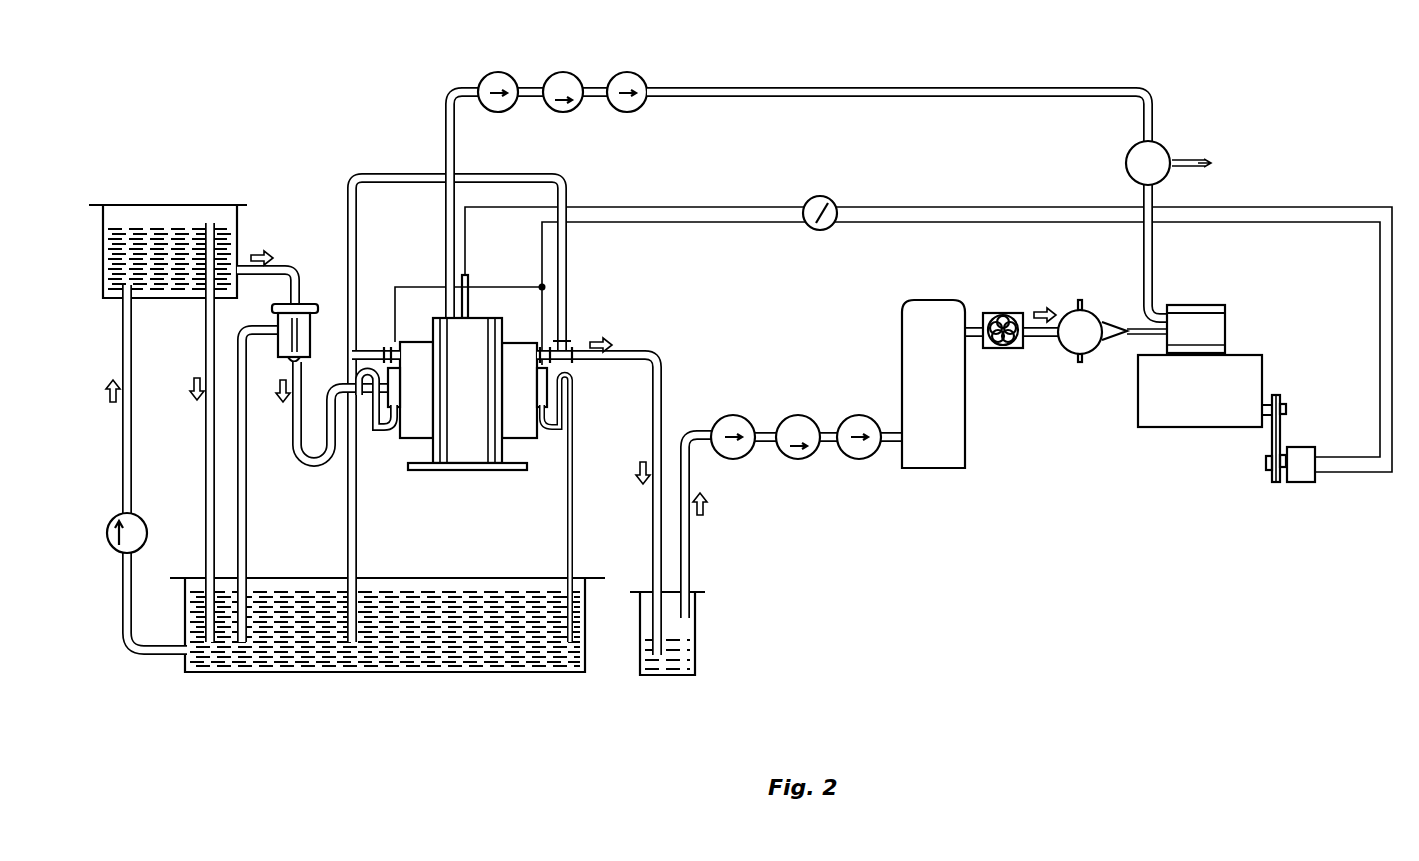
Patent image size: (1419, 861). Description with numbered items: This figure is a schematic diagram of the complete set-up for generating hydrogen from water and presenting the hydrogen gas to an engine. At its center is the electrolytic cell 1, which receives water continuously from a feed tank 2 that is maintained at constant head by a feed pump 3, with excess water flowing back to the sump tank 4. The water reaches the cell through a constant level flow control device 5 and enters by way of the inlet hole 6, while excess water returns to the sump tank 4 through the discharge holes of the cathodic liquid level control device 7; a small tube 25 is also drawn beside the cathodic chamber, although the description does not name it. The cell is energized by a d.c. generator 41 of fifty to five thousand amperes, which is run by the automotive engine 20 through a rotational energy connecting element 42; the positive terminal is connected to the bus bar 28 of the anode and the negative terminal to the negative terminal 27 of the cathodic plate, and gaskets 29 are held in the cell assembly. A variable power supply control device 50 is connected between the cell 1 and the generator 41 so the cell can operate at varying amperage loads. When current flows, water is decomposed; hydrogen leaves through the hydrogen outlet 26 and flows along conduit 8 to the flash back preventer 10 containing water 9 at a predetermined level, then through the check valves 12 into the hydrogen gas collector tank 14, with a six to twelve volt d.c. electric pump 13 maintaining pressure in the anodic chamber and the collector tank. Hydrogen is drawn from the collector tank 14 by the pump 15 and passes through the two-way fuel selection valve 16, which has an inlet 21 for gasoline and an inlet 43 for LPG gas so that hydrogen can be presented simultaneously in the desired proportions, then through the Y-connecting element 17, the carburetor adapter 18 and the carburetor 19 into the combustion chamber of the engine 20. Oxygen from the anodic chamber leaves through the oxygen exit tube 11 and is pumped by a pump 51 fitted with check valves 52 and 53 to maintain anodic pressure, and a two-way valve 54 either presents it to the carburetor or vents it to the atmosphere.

The electrolytic cell 1 is at (478, 334).
The feed tank 2 is at (103, 290).
The feed pump 3 is at (118, 513).
The sump tank 4 is at (585, 645).
The constant level flow control device 5 is at (307, 303).
The inlet hole 6 is at (463, 395).
The cathodic liquid level control device 7 is at (573, 374).
The conduit 8 is at (664, 375).
The water 9 is at (670, 662).
The flash back preventer 10 is at (695, 632).
The oxygen exit tube 11 is at (446, 118).
The check valve 12 is at (733, 414).
The electric pump 13 is at (798, 414).
The hydrogen gas collector tank 14 is at (933, 384).
The pump 15 is at (1003, 312).
The two-way fuel selection valve 16 is at (1066, 312).
The Y-connecting element 17 is at (1123, 328).
The carburetor adapter 18 is at (1195, 305).
The carburetor 19 is at (1215, 331).
The automotive engine 20 is at (1200, 391).
The inlet for gasoline fuel 21 is at (1082, 300).
The electrolyte return tube 25 is at (547, 440).
The hydrogen outlet 26 is at (394, 352).
The negative terminal of the cathode 27 is at (393, 400).
The bus bar 28 is at (468, 278).
The gaskets 29 is at (490, 455).
The d.c. generator 41 is at (1300, 483).
The rotational energy connecting element 42 is at (1272, 440).
The inlet for LPG gas fuel 43 is at (1082, 362).
The variable power supply control device 50 is at (826, 196).
The pump 51 is at (566, 72).
The check valve 52 is at (503, 72).
The check valve 53 is at (631, 72).
The two-way valve 54 is at (1163, 145).